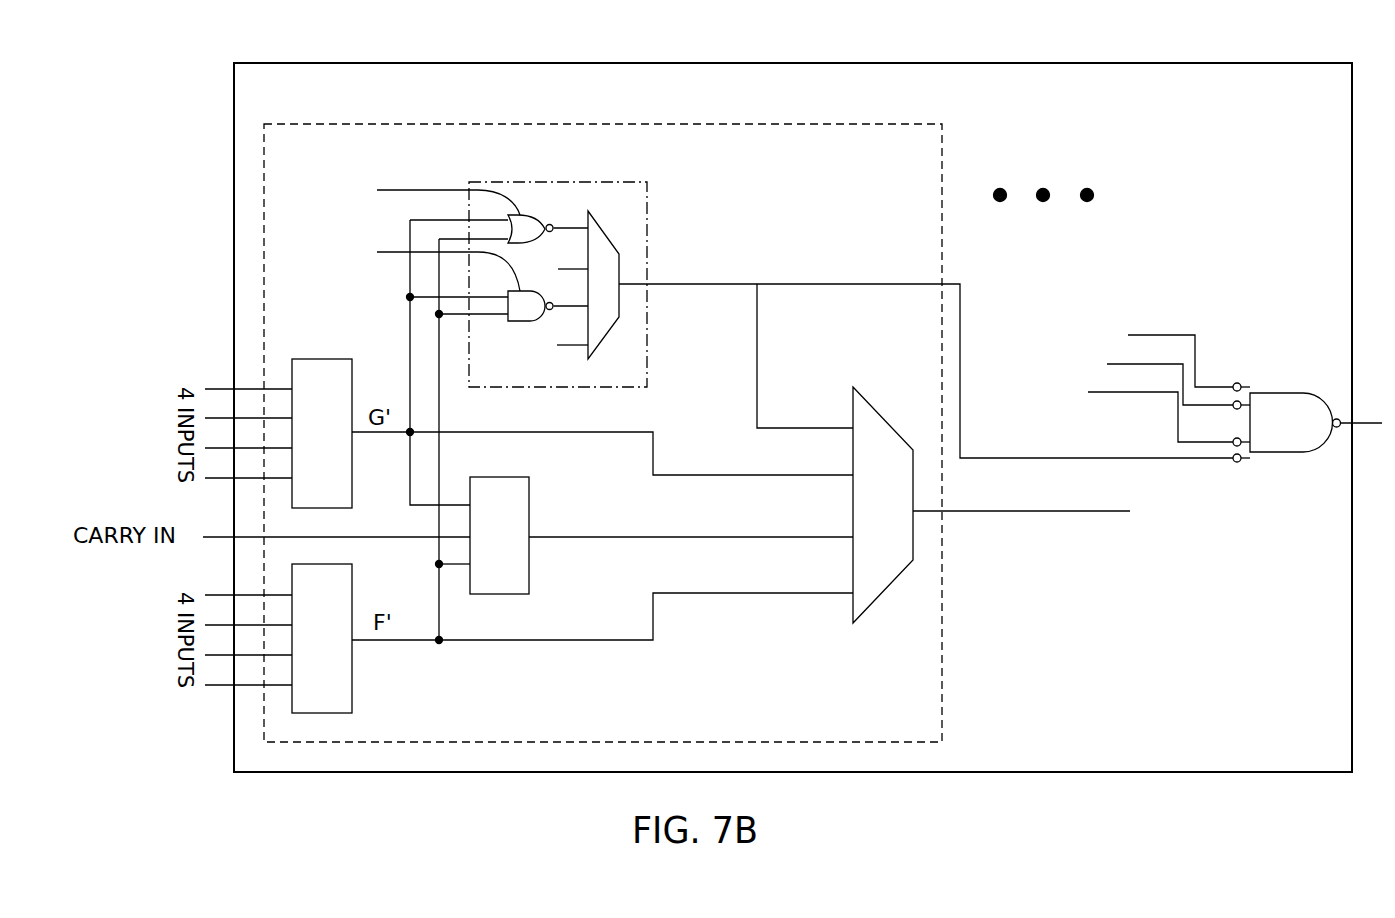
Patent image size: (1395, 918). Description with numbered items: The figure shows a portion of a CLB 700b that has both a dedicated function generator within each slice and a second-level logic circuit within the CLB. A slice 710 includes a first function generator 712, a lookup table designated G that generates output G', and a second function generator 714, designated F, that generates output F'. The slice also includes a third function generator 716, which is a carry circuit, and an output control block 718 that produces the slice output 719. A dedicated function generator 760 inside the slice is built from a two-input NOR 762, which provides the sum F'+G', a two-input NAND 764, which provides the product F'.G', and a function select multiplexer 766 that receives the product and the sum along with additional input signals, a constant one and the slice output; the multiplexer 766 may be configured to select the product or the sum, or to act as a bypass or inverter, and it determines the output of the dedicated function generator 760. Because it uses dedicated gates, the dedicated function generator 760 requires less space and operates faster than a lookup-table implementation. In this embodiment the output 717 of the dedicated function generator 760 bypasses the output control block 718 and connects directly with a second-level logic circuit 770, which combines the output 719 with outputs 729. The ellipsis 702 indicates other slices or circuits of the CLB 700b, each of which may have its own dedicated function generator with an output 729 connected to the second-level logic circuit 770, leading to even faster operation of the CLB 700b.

The CLB 700b is at (619, 63).
The ellipsis 702 is at (1050, 189).
The slice 710 is at (438, 124).
The first function generator 712 is at (304, 445).
The second function generator 714 is at (304, 652).
The third function generator 716 is at (480, 547).
The output of dedicated function generator 717 is at (908, 284).
The output control block 718 is at (865, 517).
The output Sout 719 is at (1065, 511).
The output 729 is at (1195, 335).
The dedicated function generator 760 is at (647, 200).
The two-input NOR 762 is at (426, 200).
The two-input NAND 764 is at (426, 269).
The function select multiplexer 766 is at (619, 254).
The second-level logic circuit 770 is at (1300, 452).